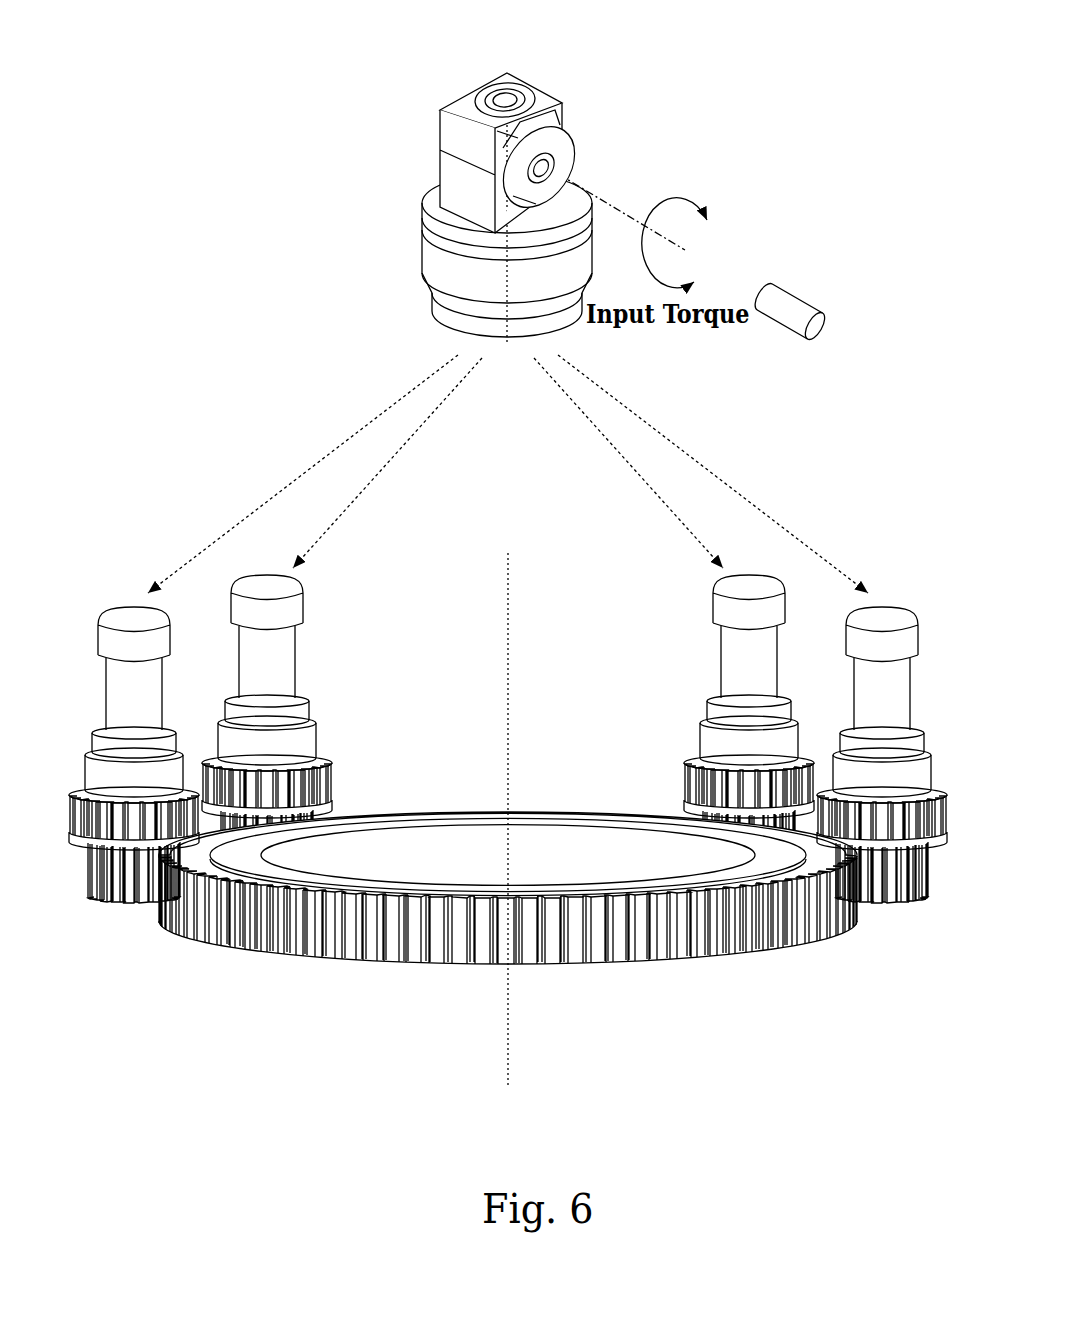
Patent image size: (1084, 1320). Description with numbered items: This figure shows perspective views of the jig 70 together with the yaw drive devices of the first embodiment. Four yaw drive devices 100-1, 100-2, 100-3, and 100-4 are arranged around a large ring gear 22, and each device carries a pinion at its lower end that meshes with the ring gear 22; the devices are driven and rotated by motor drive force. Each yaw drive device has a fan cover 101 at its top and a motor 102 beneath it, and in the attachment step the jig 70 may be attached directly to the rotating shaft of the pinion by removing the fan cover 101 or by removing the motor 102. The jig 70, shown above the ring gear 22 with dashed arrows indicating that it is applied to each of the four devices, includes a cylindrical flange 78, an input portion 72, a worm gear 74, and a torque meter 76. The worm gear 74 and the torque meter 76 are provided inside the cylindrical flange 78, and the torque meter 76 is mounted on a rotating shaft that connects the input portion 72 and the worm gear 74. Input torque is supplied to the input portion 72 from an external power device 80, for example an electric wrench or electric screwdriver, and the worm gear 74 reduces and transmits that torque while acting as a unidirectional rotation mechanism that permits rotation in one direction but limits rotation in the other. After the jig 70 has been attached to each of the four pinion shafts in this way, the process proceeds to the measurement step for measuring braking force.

The jig 70 is at (578, 67).
The input portion 72 is at (573, 163).
The worm gear 74 is at (487, 197).
The torque meter 76 is at (562, 126).
The cylindrical flange 78 is at (420, 257).
The external power device 80 is at (797, 297).
The yaw drive device 100-1 is at (897, 601).
The yaw drive device 100-2 is at (707, 664).
The yaw drive device 100-3 is at (309, 664).
The yaw drive device 100-4 is at (119, 601).
The fan cover 101 is at (161, 619).
The motor 102 is at (134, 653).
The ring gear 22 is at (367, 935).